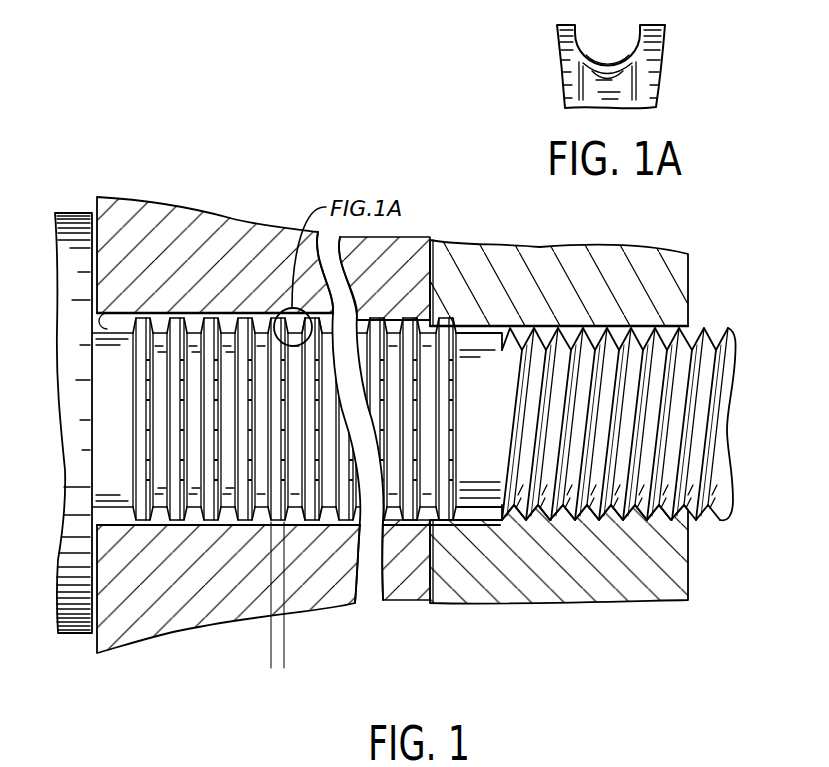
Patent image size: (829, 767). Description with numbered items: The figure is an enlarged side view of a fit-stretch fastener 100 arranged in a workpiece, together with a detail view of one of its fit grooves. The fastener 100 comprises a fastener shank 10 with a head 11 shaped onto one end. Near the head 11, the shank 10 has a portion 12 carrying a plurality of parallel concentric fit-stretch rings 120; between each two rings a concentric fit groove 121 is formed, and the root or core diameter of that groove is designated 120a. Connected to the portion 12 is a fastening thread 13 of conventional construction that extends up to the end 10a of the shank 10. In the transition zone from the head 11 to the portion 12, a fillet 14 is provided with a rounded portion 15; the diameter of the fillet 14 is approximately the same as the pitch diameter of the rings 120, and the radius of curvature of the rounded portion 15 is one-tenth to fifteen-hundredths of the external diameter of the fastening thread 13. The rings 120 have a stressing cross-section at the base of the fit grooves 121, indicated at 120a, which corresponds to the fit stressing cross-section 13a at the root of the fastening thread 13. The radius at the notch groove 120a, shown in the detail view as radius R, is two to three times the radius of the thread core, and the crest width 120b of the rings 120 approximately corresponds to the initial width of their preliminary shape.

In FIG. 1, the fastener shank 10 is at (483, 472).
In FIG. 1, the end of shank 10a is at (726, 440).
In FIG. 1, the head 11 is at (72, 634).
In FIG. 1, the portion with fit-stretch rings 12 is at (258, 522).
In FIG. 1, the fastening thread 13 is at (628, 473).
In FIG. 1, the fit stressing cross-section 13a is at (585, 522).
In FIG. 1, the fillet 14 is at (118, 328).
In FIG. 1, the rounded portion 15 is at (100, 320).
In FIG. 1, the fit-stretch fastener 100 is at (741, 328).
In FIG. 1, the concentric fit-stretch rings 120 is at (247, 318).
In FIG. 1A, the concentric fit-stretch rings 120 is at (569, 26).
In FIG. 1, the root or core diameter of groove 120a is at (328, 508).
In FIG. 1, the crest width 120b is at (228, 666).
In FIG. 1, the fit groove 121 is at (193, 518).
In FIG. 1A, the fit groove 121 is at (598, 50).
In FIG. 1A, the groove bottom radius R is at (622, 48).